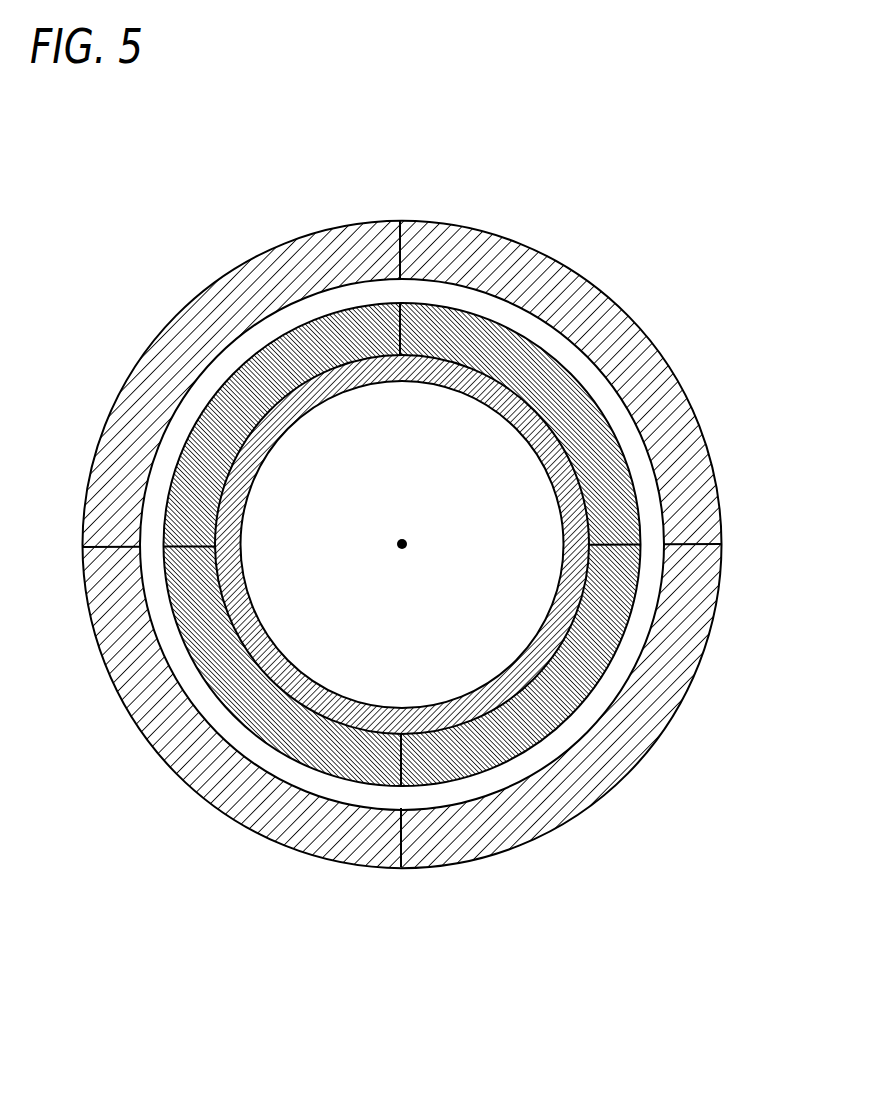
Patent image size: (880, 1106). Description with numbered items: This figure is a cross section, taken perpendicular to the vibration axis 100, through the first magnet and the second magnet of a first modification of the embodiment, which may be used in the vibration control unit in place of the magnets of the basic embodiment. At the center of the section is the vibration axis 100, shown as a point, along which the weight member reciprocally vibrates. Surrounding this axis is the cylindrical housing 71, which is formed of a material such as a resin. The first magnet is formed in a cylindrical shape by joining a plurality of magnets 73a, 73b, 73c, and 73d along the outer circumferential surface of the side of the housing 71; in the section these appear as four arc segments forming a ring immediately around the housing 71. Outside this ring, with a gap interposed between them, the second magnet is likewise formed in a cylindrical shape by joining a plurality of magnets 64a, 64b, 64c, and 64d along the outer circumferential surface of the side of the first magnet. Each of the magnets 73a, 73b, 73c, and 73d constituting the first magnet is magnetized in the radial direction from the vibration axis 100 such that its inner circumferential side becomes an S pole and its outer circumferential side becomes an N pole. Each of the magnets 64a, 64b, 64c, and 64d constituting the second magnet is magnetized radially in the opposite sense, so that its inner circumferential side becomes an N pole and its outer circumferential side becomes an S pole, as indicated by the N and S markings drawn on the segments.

The magnet 64a is at (569, 248).
The magnet 64b is at (684, 686).
The magnet 64c is at (116, 690).
The magnet 64d is at (236, 266).
The magnet 73a is at (618, 441).
The magnet 73b is at (489, 770).
The magnet 73c is at (314, 771).
The magnet 73d is at (185, 443).
The housing 71 is at (432, 360).
The vibration axis 100 is at (402, 544).